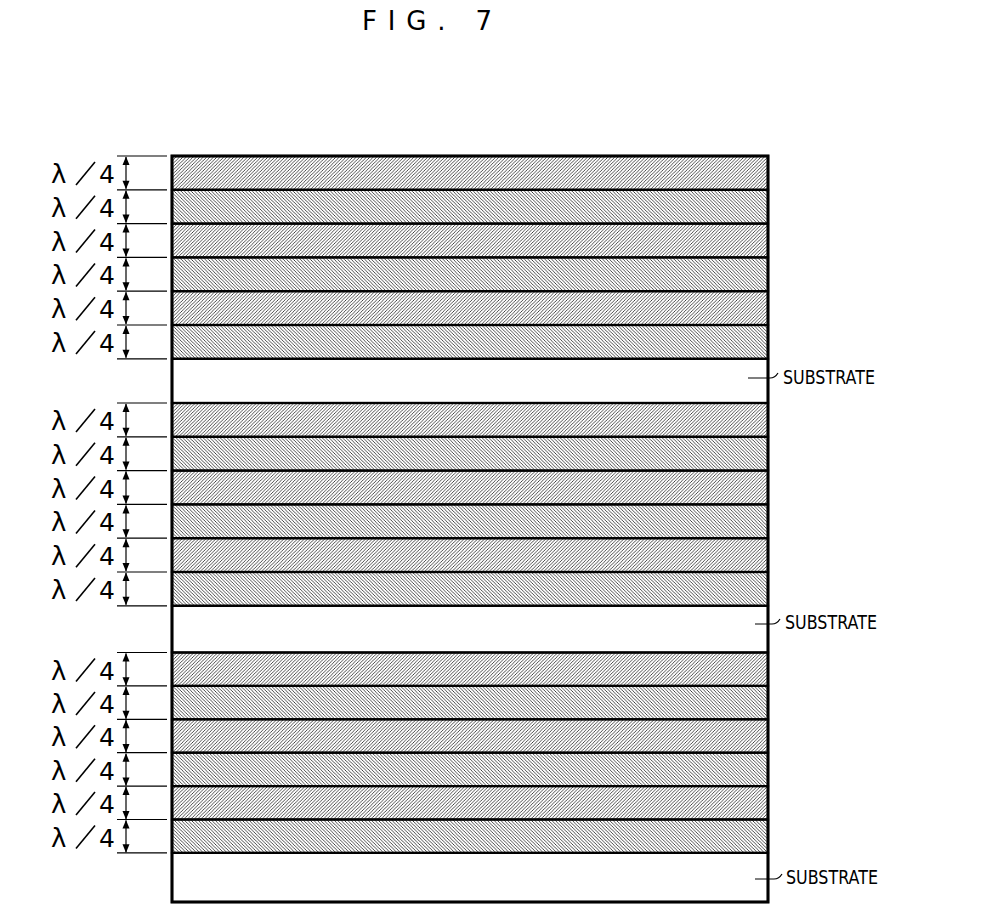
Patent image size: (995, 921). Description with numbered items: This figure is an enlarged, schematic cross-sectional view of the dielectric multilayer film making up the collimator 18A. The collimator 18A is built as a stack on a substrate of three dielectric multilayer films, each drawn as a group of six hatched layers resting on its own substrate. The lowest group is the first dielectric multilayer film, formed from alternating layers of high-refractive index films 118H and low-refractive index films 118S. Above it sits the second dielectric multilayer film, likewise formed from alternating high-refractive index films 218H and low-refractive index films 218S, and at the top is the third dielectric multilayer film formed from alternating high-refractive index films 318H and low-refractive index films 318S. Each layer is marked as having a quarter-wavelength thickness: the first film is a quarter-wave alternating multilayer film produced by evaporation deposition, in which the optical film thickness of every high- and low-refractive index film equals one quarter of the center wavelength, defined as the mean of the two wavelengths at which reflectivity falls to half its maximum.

The collimator 18A is at (745, 137).
The low-refractive index films 318S is at (757, 170).
The high-refractive index films 318H is at (757, 204).
The low-refractive index films 218S is at (757, 417).
The high-refractive index films 218H is at (757, 451).
The low-refractive index films 118S is at (757, 666).
The high-refractive index films 118H is at (757, 700).